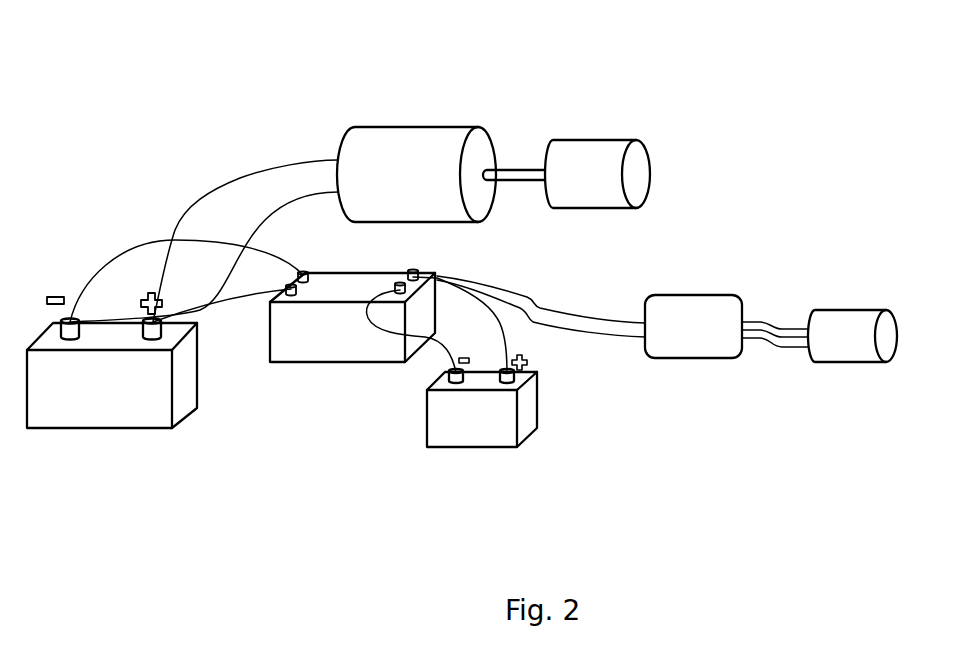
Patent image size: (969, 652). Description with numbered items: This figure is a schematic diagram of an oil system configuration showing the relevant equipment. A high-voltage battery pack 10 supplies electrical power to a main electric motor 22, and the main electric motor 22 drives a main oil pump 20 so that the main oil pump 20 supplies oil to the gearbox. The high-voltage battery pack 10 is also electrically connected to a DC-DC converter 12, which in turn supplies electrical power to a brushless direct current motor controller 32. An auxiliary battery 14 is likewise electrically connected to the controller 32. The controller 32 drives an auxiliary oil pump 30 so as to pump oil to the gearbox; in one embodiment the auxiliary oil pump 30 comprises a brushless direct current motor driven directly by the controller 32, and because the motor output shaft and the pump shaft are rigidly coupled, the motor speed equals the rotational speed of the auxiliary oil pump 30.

The high-voltage battery pack 10 is at (88, 413).
The DC-DC converter 12 is at (333, 347).
The auxiliary battery 14 is at (473, 430).
The main oil pump 20 is at (595, 160).
The main electric motor 22 is at (403, 140).
The auxiliary oil pump 30 is at (857, 349).
The BLDC motor controller 32 is at (690, 347).